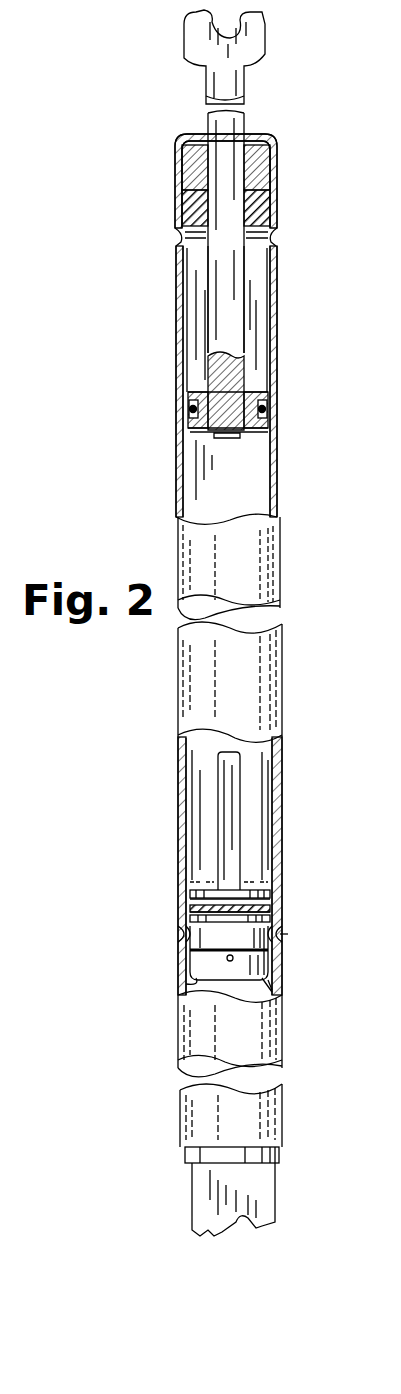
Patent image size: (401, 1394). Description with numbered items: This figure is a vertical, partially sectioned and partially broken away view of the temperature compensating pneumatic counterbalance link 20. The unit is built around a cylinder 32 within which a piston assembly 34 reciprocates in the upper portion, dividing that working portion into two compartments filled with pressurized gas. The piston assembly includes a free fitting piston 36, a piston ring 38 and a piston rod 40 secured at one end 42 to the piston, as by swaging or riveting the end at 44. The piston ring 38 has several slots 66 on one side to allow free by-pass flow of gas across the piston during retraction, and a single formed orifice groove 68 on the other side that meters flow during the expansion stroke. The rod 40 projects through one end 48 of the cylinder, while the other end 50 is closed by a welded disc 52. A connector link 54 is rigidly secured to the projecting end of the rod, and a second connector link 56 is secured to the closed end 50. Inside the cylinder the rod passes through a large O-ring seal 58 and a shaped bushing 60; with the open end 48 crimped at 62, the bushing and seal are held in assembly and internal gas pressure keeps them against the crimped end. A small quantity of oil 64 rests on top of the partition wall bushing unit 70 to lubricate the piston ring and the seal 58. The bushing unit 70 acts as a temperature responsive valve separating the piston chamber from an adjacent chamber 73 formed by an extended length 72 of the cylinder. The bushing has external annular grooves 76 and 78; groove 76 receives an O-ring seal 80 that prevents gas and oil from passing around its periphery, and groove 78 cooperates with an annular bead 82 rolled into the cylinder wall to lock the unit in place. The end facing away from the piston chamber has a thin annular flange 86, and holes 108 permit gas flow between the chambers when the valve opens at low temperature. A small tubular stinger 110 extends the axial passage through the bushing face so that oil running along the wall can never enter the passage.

The counterbalance link 20 is at (172, 572).
The cylinder 32 is at (278, 486).
The piston assembly 34 is at (252, 383).
The piston 36 is at (272, 396).
The piston ring 38 is at (270, 410).
The piston rod 40 is at (233, 286).
The end of piston rod 42 is at (222, 432).
The swaged or riveted end 44 is at (230, 436).
The open cylinder end 48 is at (277, 143).
The closed cylinder end 50 is at (282, 1144).
The disc 52 is at (282, 1160).
The connector link 54 is at (252, 42).
The second connector link 56 is at (266, 1204).
The O-ring seal 58 is at (262, 206).
The bushing 60 is at (260, 176).
The crimp 62 is at (246, 138).
The oil 64 is at (254, 882).
The slots 66 is at (189, 406).
The orifice groove 68 is at (268, 430).
The partition wall bushing unit 70 is at (212, 934).
The extended length 72 is at (282, 1014).
The adjacent chamber 73 is at (282, 980).
The annular groove 76 is at (190, 909).
The annular groove 78 is at (272, 936).
The O-ring seal 80 is at (272, 906).
The annular bead 82 is at (288, 936).
The thin annular flange 86 is at (194, 980).
The holes 108 is at (227, 959).
The stinger tube 110 is at (234, 778).